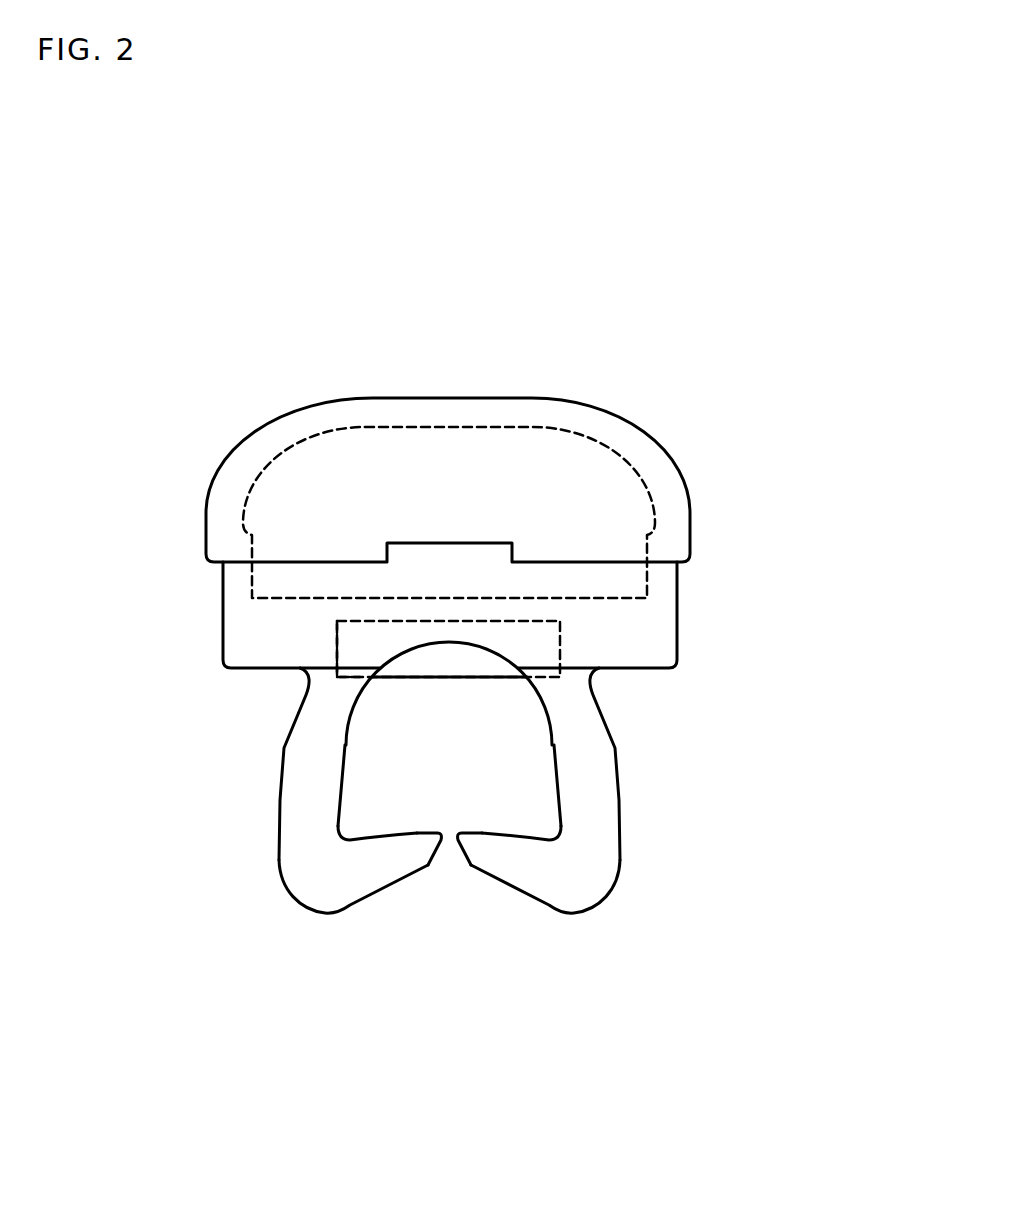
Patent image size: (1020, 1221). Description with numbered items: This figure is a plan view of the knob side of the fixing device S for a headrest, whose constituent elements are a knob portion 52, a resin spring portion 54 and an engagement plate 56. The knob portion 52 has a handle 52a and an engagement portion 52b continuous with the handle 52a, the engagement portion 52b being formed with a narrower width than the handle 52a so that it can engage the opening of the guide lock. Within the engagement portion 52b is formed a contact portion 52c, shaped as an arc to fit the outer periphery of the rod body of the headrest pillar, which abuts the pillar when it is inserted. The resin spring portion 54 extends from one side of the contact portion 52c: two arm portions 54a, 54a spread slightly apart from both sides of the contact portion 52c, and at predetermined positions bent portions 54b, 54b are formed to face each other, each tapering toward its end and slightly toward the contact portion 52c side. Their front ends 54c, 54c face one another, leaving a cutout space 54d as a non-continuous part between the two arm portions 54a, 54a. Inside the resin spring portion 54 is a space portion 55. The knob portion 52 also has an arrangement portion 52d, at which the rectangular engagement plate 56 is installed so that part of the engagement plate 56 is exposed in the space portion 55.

The fixing device S is at (185, 288).
The knob portion 52 is at (600, 408).
The handle 52a is at (437, 447).
The engagement portion 52b is at (670, 605).
The contact portion 52c is at (458, 643).
The arrangement portion 52d is at (367, 621).
The resin spring portion 54 is at (270, 856).
The arm portion 54a is at (308, 748).
The bent portion 54b is at (358, 875).
The front end 54c is at (473, 840).
The cutout space 54d is at (462, 847).
The space portion 55 is at (553, 763).
The engagement plate 56 is at (455, 690).